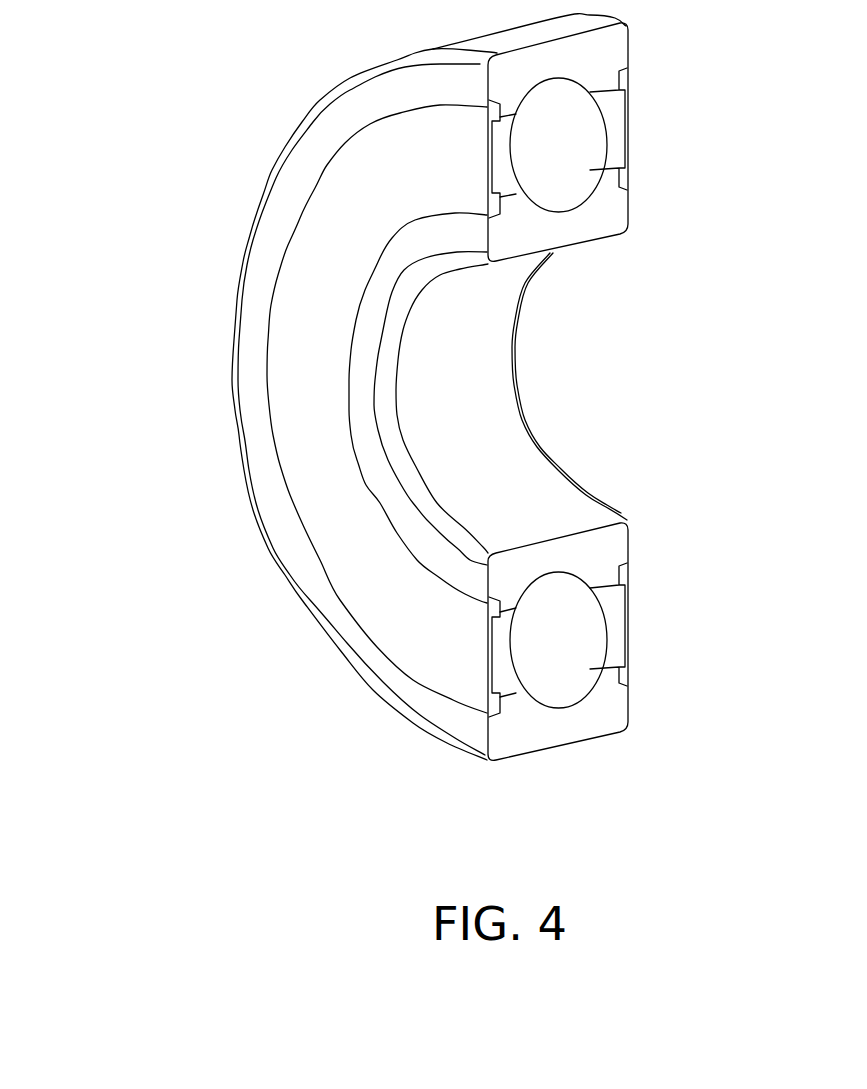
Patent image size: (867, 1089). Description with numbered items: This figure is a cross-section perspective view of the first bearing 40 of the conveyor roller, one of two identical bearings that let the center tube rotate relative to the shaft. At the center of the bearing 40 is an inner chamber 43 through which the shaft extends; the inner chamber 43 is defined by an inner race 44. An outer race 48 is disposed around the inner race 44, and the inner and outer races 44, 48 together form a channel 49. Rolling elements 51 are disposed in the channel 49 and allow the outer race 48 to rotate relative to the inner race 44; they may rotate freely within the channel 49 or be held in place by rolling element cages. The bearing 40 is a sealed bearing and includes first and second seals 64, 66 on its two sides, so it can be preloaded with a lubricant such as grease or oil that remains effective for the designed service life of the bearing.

The first bearing 40 is at (205, 152).
The inner chamber 43 is at (435, 390).
The inner race 44 is at (605, 555).
The outer race 48 is at (585, 720).
The channel 49 is at (592, 640).
The rolling elements 51 is at (530, 629).
The first seal 64 is at (505, 679).
The second seal 66 is at (632, 607).